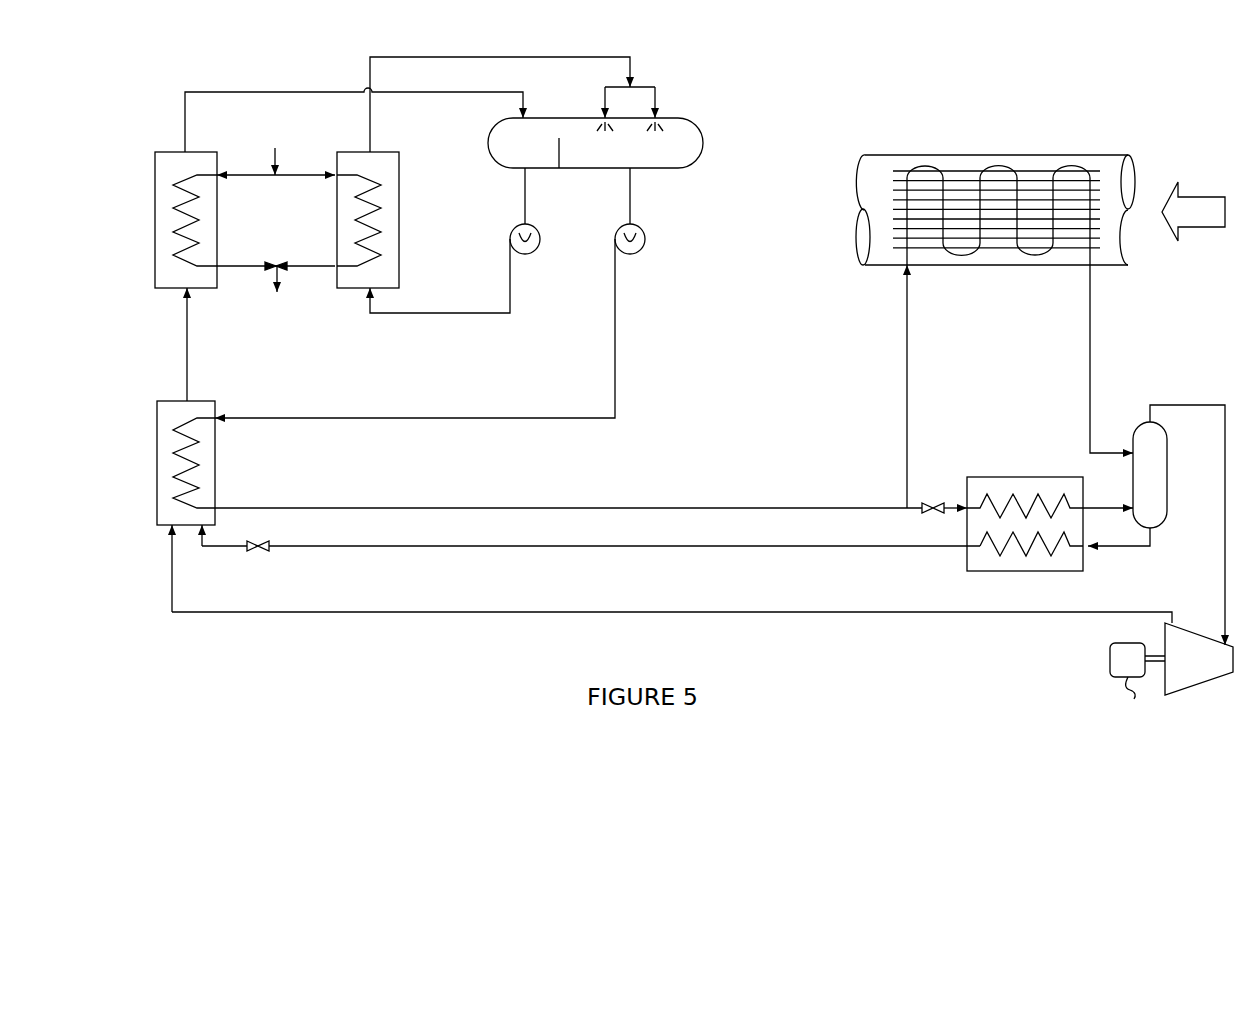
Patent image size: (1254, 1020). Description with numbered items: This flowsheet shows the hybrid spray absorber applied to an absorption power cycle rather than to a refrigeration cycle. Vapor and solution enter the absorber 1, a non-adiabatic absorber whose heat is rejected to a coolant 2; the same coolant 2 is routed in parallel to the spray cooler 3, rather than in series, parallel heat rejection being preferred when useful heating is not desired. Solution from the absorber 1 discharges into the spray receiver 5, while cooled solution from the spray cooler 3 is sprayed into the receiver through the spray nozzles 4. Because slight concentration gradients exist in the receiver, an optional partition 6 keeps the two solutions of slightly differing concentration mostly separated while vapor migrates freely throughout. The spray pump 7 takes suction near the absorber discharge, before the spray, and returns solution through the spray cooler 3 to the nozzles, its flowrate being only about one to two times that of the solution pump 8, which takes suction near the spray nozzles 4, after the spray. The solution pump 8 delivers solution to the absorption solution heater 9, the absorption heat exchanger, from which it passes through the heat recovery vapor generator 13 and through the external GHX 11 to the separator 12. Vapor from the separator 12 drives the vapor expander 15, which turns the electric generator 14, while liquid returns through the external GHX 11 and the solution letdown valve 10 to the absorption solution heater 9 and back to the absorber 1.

The absorber 1 is at (302, 244).
The coolant 2 is at (276, 207).
The spray cooler 3 is at (483, 185).
The spray nozzles 4 is at (668, 97).
The spray receiver 5 is at (624, 168).
The partition 6 is at (600, 153).
The spray pump 7 is at (547, 239).
The solution pump 8 is at (463, 293).
The absorption solution heater 9 is at (664, 444).
The solution letdown valve 10 is at (591, 565).
The external GHX 11 is at (1050, 496).
The separator 12 is at (1156, 455).
The heat recovery vapor generator 13 is at (1040, 263).
The electric generator 14 is at (1084, 668).
The vapor expander 15 is at (1204, 686).